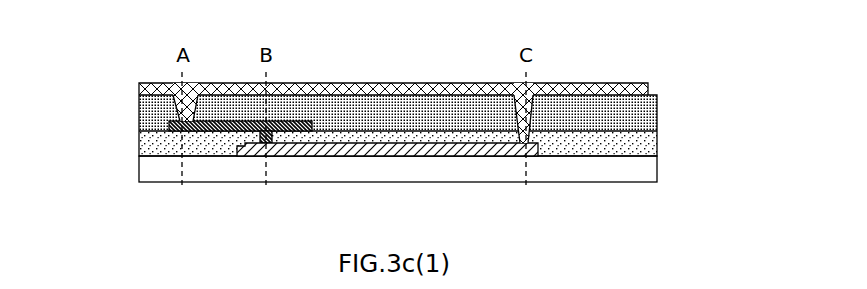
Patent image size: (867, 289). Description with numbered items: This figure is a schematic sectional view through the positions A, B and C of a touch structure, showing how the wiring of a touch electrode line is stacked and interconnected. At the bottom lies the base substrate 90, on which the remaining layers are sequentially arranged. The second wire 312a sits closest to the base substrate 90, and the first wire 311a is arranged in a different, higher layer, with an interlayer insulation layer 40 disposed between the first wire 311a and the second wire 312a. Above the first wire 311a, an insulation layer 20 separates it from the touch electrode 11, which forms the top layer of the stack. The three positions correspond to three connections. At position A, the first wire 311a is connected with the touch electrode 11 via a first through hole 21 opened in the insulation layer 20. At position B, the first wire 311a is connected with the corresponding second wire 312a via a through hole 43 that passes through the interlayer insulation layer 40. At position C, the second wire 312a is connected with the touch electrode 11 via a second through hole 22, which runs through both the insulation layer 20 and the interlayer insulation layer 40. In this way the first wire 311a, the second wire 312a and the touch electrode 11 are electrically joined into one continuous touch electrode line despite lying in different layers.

The touch electrode 11 is at (638, 89).
The insulation layer 20 is at (657, 110).
The interlayer insulation layer 40 is at (657, 143).
The base substrate 90 is at (650, 167).
The first through hole 21 is at (176, 107).
The second through hole 22 is at (515, 118).
The through hole 43 is at (262, 138).
The first wire 311a is at (293, 127).
The second wire 312a is at (413, 152).